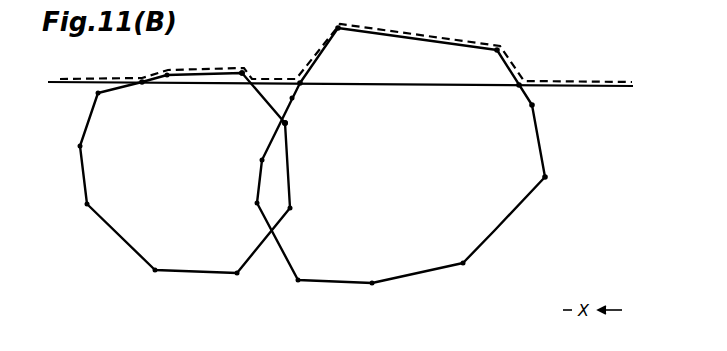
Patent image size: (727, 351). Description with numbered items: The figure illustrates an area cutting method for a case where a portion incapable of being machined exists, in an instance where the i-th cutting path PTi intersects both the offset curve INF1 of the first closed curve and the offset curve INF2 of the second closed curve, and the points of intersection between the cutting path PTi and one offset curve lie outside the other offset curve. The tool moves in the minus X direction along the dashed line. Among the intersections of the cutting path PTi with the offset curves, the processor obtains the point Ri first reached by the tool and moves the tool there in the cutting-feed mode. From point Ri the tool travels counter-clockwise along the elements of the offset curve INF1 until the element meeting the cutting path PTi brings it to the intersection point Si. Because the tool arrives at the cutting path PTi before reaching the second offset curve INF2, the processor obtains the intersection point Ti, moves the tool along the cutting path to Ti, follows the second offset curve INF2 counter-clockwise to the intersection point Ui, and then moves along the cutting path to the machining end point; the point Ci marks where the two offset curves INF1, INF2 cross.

The intersection point Ui is at (145, 93).
The intersection point Ti is at (236, 89).
The intersection point Si is at (309, 94).
The intersection point Ri is at (508, 96).
The intersection point Ci is at (289, 121).
The i-th cutting path PTi is at (608, 87).
The offset curve of the first closed curve INF1 is at (490, 235).
The offset curve of the second closed curve INF2 is at (140, 255).